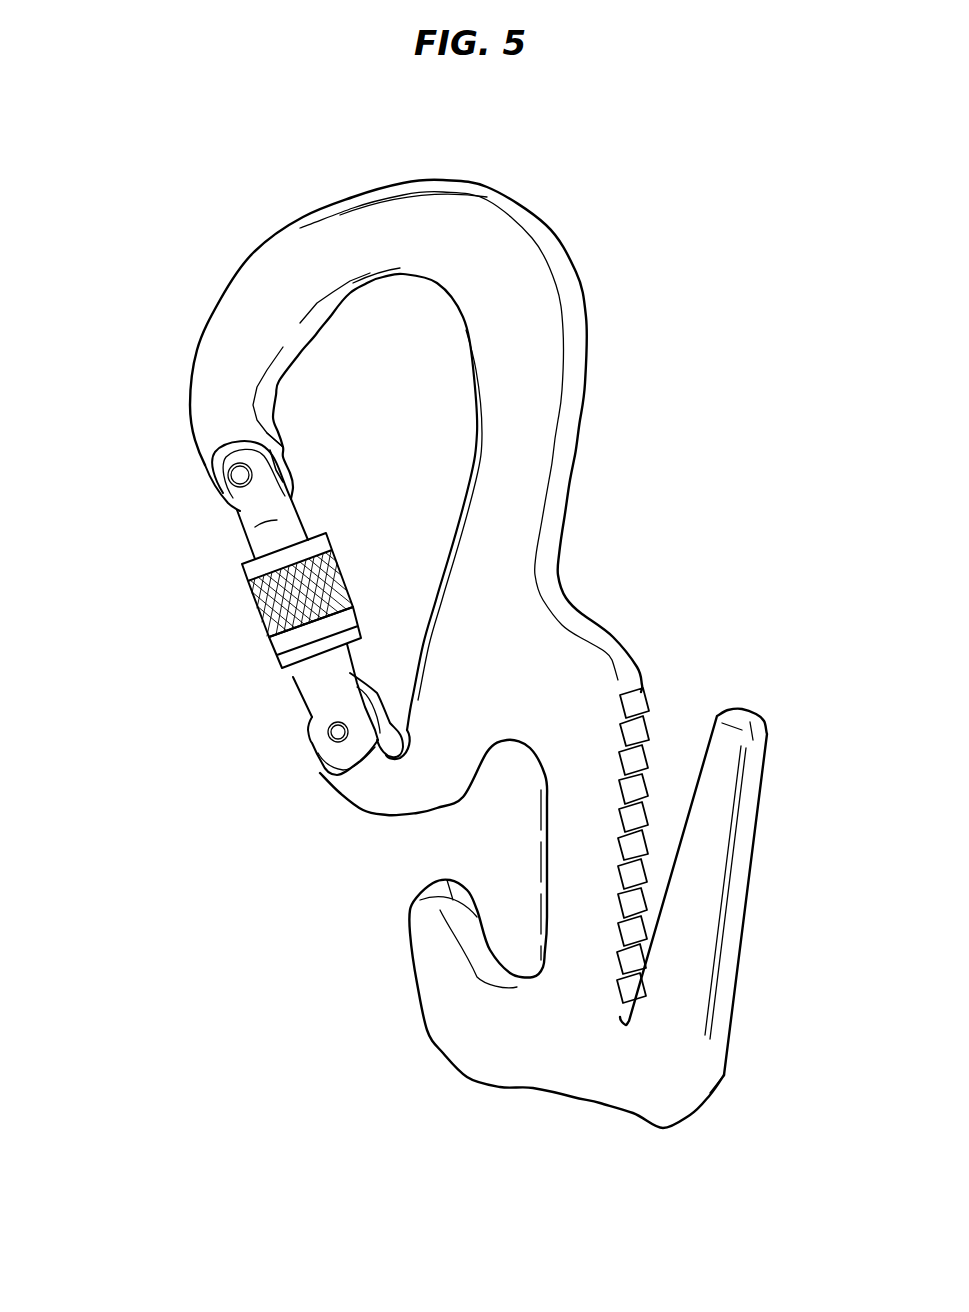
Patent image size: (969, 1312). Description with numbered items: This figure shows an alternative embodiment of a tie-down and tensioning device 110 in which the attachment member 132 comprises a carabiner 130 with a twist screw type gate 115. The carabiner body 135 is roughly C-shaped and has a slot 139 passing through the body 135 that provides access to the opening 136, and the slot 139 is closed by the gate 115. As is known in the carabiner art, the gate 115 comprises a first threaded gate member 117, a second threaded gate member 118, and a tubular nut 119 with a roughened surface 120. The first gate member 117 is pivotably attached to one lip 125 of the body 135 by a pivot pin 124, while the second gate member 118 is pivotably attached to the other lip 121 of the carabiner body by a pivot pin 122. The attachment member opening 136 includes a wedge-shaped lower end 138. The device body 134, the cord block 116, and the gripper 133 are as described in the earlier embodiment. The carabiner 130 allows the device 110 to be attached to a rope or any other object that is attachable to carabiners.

The tie-down and tensioning device 110 is at (177, 232).
The twist screw type gate 115 is at (289, 645).
The cord block 116 is at (443, 963).
The first threaded gate member 117 is at (293, 532).
The second threaded gate member 118 is at (312, 668).
The tubular nut 119 is at (270, 583).
The roughened surface 120 is at (265, 623).
The lip 121 is at (312, 727).
The pivot pin 122 is at (338, 737).
The pivot pin 124 is at (252, 518).
The lip 125 is at (256, 433).
The carabiner 130 is at (611, 232).
The attachment member 132 is at (495, 232).
The gripper 133 is at (713, 895).
The device body 134 is at (576, 853).
The carabiner body 135 is at (371, 212).
The opening 136 is at (436, 380).
The wedge-shaped lower end 138 is at (388, 760).
The slot 139 is at (371, 540).